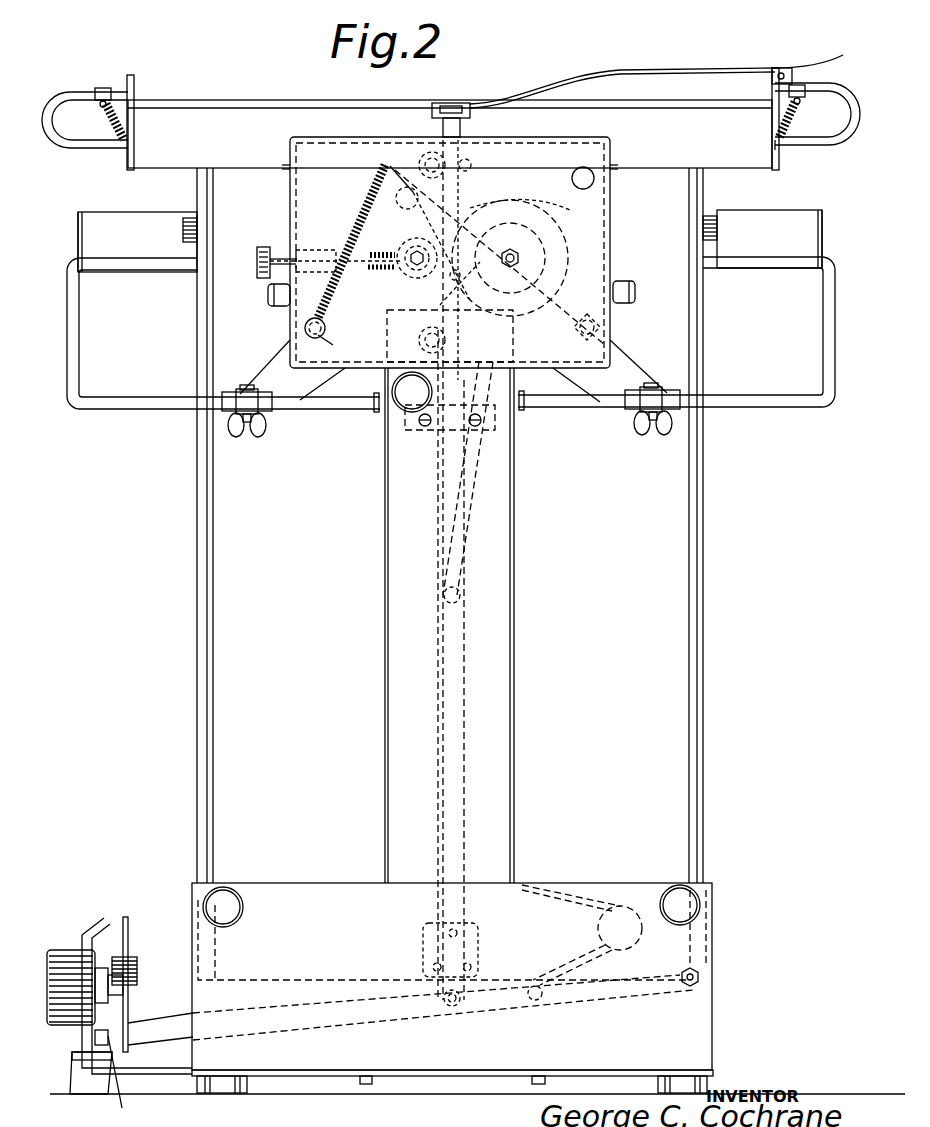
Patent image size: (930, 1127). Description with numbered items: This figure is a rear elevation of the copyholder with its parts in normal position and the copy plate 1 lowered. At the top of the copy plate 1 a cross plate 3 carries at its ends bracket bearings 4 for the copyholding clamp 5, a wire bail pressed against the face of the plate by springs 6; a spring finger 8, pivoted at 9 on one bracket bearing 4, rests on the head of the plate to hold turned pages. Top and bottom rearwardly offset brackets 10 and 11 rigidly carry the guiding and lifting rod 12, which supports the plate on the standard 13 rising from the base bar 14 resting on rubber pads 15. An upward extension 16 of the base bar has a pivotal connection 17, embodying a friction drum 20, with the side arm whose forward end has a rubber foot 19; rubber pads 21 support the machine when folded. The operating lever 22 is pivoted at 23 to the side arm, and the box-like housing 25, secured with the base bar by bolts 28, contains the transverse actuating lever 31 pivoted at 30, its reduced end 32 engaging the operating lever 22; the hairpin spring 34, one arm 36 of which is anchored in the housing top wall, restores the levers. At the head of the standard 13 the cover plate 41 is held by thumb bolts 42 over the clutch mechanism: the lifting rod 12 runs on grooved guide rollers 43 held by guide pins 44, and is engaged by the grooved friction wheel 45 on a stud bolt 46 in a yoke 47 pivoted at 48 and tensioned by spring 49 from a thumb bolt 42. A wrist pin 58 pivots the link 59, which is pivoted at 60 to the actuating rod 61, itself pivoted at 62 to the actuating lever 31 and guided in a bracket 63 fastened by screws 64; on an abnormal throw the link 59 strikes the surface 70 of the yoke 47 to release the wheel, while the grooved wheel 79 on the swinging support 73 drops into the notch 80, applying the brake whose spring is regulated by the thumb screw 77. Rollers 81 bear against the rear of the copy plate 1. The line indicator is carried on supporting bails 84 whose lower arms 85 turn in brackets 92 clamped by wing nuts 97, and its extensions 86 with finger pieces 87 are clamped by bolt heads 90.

The copy plate 1 is at (477, 631).
The cross plate 3 is at (266, 120).
The bracket bearings 4 is at (136, 106).
The copyholding clamp 5 is at (800, 142).
The springs 6 is at (104, 120).
The spring finger 8 is at (680, 70).
The pivot 9 is at (786, 69).
The top bracket 10 is at (462, 103).
The bottom bracket 11 is at (482, 975).
The guiding and lifting rod 12 is at (462, 131).
The standard 13 is at (512, 538).
The base bar 14 is at (420, 1092).
The rubber pads 15 is at (228, 1096).
The upward extension 16 is at (103, 916).
The pivotal connection 17 is at (110, 975).
The rubber foot 19 is at (92, 1095).
The friction drum 20 is at (67, 950).
The rubber pads 21 is at (672, 890).
The operating lever 22 is at (128, 931).
The pivot 23 is at (137, 973).
The box-like housing 25 is at (710, 1027).
The bolts 28 is at (537, 1086).
The pivot 30 is at (700, 977).
The actuating lever 31 is at (158, 1020).
The reduced end 32 is at (129, 1081).
The hairpin spring 34 is at (641, 938).
The spring arm 36 is at (576, 903).
The cover plate 41 is at (600, 216).
The thumb bolts 42 is at (573, 176).
The grooved guide rollers 43 is at (430, 152).
The guide pins 44 is at (472, 166).
The grooved friction wheel 45 is at (553, 224).
The stud bolt 46 is at (510, 258).
The yoke 47 is at (476, 208).
The pivot 48 is at (580, 337).
The spring 49 is at (364, 216).
The wrist pin 58 is at (470, 276).
The link 59 is at (574, 328).
The pivot 60 is at (461, 593).
The actuating rod 61 is at (470, 662).
The pivot 62 is at (453, 1008).
The bracket 63 is at (487, 422).
The screws 64 is at (423, 428).
The surface 70 is at (478, 260).
The swinging support 73 is at (397, 254).
The thumb screw 77 is at (262, 247).
The grooved wheel 79 is at (405, 290).
The notch 80 is at (437, 300).
The rollers 81 is at (281, 306).
The supporting bails 84 is at (80, 332).
The lower yoke arms 85 is at (146, 397).
The extension 86 is at (131, 216).
The finger piece 87 is at (78, 216).
The bolt head 90 is at (183, 233).
The bracket 92 is at (257, 392).
The wing nut 97 is at (250, 436).